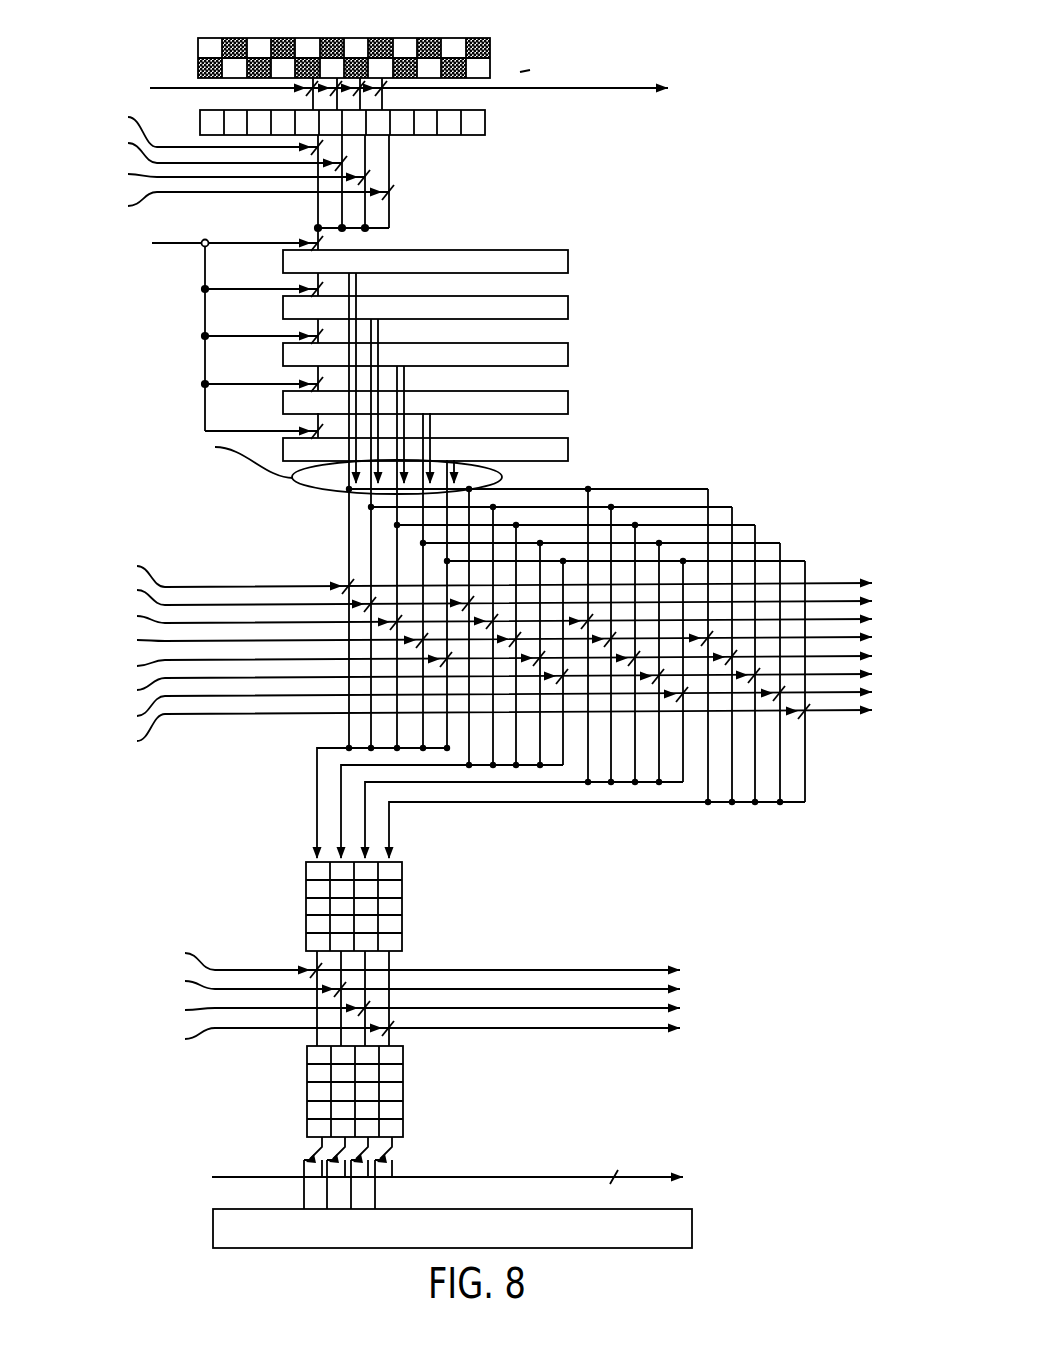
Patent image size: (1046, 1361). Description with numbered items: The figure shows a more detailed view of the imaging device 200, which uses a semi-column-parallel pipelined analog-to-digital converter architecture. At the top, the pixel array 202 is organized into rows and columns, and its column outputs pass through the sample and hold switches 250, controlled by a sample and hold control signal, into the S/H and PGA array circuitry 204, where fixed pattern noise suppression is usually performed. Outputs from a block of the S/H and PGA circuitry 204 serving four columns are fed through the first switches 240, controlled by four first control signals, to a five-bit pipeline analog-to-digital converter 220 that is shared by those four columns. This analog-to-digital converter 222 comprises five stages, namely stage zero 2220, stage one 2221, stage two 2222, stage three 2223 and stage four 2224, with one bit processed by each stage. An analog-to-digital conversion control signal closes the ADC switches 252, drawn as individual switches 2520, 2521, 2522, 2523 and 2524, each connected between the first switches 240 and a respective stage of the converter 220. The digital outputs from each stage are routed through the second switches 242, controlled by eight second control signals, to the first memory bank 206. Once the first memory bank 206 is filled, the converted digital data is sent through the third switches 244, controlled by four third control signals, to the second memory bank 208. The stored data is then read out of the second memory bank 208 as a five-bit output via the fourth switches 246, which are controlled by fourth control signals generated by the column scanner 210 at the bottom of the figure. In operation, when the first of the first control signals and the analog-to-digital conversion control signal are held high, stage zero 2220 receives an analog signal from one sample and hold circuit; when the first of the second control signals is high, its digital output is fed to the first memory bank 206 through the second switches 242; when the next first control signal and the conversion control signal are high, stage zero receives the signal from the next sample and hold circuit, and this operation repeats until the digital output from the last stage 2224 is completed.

The imaging device 200 is at (110, 44).
The pixel array 202 is at (650, 34).
The S/H and PGA array circuitry 204 is at (485, 128).
The first memory bank 206 is at (402, 885).
The second memory bank 208 is at (403, 1075).
The column scanner 210 is at (692, 1233).
The pipeline analog-to-digital converter 220 is at (516, 349).
The analog-to-digital converter 222 is at (462, 349).
The stage 0 2220 is at (568, 263).
The stage 1 2221 is at (568, 309).
The stage 2 2222 is at (568, 356).
The stage 3 2223 is at (568, 404).
The stage 4 2224 is at (568, 451).
The first switches 240 is at (399, 143).
The second switches 242 is at (255, 636).
The third switches 244 is at (283, 1001).
The fourth switches 246 is at (296, 1154).
The sample and hold switches 250 is at (397, 97).
The ADC switches 252 is at (269, 323).
The ADC switch 2520 is at (306, 240).
The ADC switch 2521 is at (306, 286).
The ADC switch 2522 is at (306, 333).
The ADC switch 2523 is at (306, 381).
The ADC switch 2524 is at (306, 428).